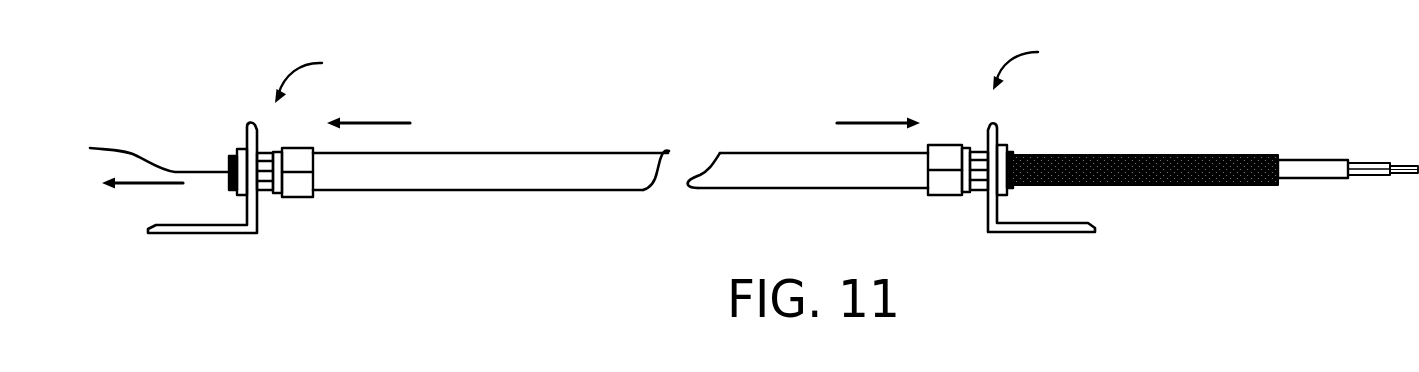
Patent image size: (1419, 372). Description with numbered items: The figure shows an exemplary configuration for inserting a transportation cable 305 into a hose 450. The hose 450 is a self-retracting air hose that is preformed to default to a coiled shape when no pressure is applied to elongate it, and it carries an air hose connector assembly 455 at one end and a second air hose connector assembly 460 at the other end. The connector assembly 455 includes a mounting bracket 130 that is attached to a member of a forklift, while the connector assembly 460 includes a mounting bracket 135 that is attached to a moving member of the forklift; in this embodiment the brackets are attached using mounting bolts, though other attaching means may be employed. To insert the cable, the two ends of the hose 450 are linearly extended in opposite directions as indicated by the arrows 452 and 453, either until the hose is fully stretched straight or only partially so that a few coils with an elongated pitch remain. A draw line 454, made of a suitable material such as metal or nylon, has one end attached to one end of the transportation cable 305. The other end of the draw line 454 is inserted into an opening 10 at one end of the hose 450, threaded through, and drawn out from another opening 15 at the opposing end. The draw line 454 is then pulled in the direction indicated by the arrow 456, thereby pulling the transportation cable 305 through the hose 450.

The opening 10 is at (1035, 131).
The opening 15 is at (210, 150).
The mounting bracket 130 is at (207, 235).
The mounting bracket 135 is at (1053, 230).
The transportation cable 305 is at (1258, 132).
The hose 450 is at (626, 229).
The arrow 452 is at (363, 120).
The arrow 453 is at (887, 117).
The draw line 454 is at (104, 149).
The air hose connector assembly 455 is at (323, 78).
The arrow 456 is at (141, 187).
The second air hose connector assembly 460 is at (1042, 65).